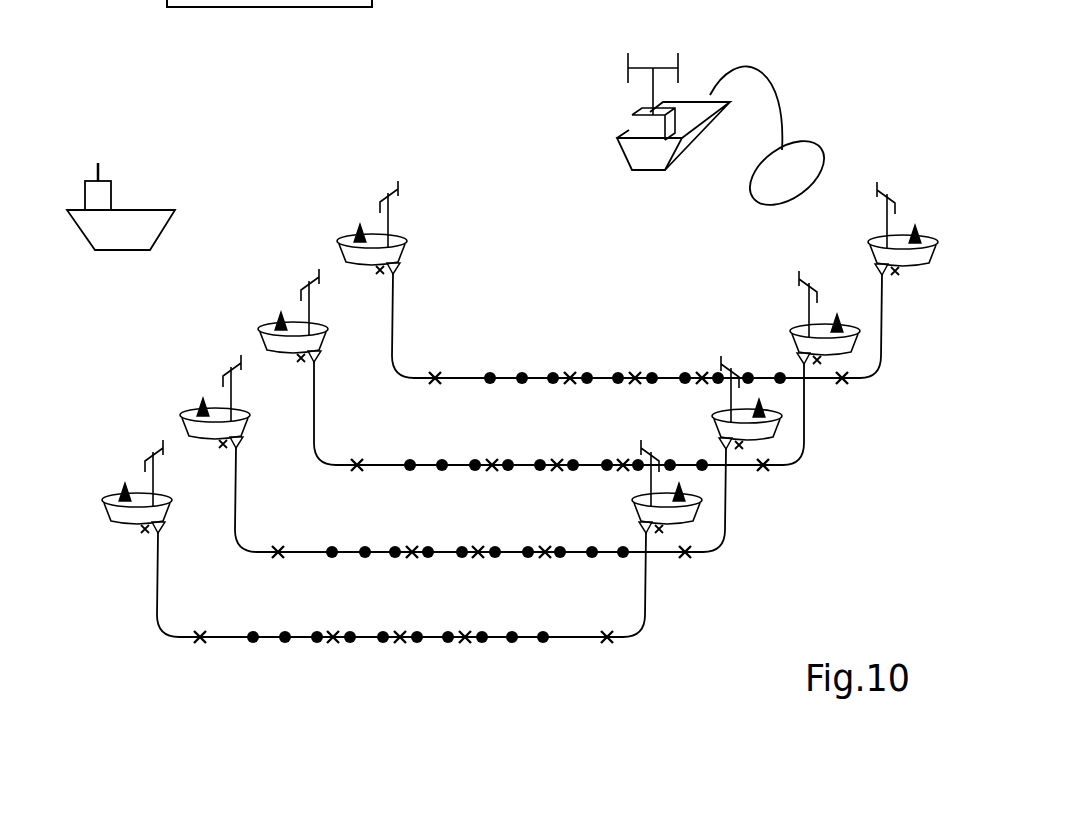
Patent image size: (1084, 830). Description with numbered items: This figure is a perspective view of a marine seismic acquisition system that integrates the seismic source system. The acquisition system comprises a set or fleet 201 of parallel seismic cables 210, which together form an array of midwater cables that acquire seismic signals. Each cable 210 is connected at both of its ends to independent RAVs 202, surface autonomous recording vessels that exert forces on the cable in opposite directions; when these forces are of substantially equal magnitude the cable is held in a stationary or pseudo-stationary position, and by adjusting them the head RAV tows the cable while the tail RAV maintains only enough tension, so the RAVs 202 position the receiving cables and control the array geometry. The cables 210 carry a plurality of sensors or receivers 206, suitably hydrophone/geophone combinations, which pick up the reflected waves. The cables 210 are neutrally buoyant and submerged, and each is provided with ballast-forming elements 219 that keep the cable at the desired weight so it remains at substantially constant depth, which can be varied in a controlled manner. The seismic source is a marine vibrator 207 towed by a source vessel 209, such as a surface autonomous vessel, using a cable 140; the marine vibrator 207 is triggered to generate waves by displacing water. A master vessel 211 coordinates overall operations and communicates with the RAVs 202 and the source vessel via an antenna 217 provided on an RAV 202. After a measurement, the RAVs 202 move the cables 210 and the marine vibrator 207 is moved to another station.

The cable 140 is at (753, 65).
The set of parallel seismic cables 201 is at (502, 457).
The RAV 202 is at (182, 423).
The sensor/receiver 206 is at (652, 378).
The marine vibrator 207 is at (810, 140).
The source vessel 209 is at (622, 152).
The seismic cable 210 is at (233, 513).
The master vessel 211 is at (138, 210).
The antenna 217 is at (283, 320).
The ballast-forming element 219 is at (655, 530).